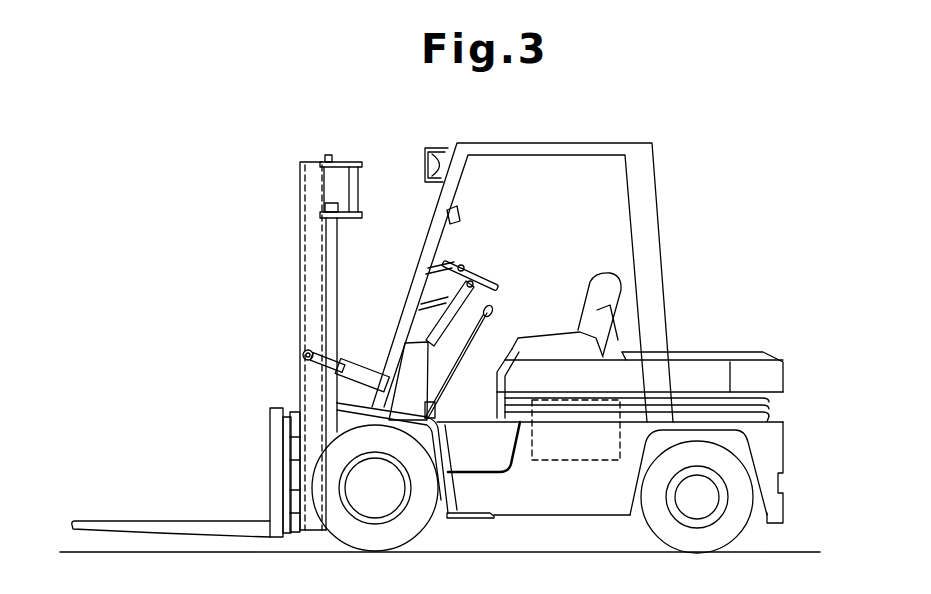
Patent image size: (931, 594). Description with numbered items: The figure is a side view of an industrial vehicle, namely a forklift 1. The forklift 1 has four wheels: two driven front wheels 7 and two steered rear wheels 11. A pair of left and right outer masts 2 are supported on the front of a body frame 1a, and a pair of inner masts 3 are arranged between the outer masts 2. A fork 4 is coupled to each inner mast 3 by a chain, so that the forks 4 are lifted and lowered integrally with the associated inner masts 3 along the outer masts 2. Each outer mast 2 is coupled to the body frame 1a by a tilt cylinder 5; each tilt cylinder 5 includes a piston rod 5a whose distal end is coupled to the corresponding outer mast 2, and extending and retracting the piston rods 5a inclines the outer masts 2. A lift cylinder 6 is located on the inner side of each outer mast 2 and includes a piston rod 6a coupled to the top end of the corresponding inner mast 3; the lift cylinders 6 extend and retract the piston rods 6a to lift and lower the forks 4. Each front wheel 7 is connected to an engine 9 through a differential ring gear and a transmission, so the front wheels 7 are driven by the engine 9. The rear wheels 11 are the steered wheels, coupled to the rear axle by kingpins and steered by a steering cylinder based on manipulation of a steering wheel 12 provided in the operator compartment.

The forklift 1 is at (714, 167).
The body frame 1a is at (553, 505).
The outer mast 2 is at (300, 190).
The inner mast 3 is at (300, 277).
The fork 4 is at (146, 527).
The tilt cylinder 5 is at (368, 372).
The piston rod 5a is at (315, 362).
The lift cylinder 6 is at (333, 237).
The piston rod 6a is at (333, 185).
The front wheel 7 is at (418, 528).
The engine 9 is at (602, 461).
The rear wheel 11 is at (733, 533).
The steering wheel 12 is at (490, 282).